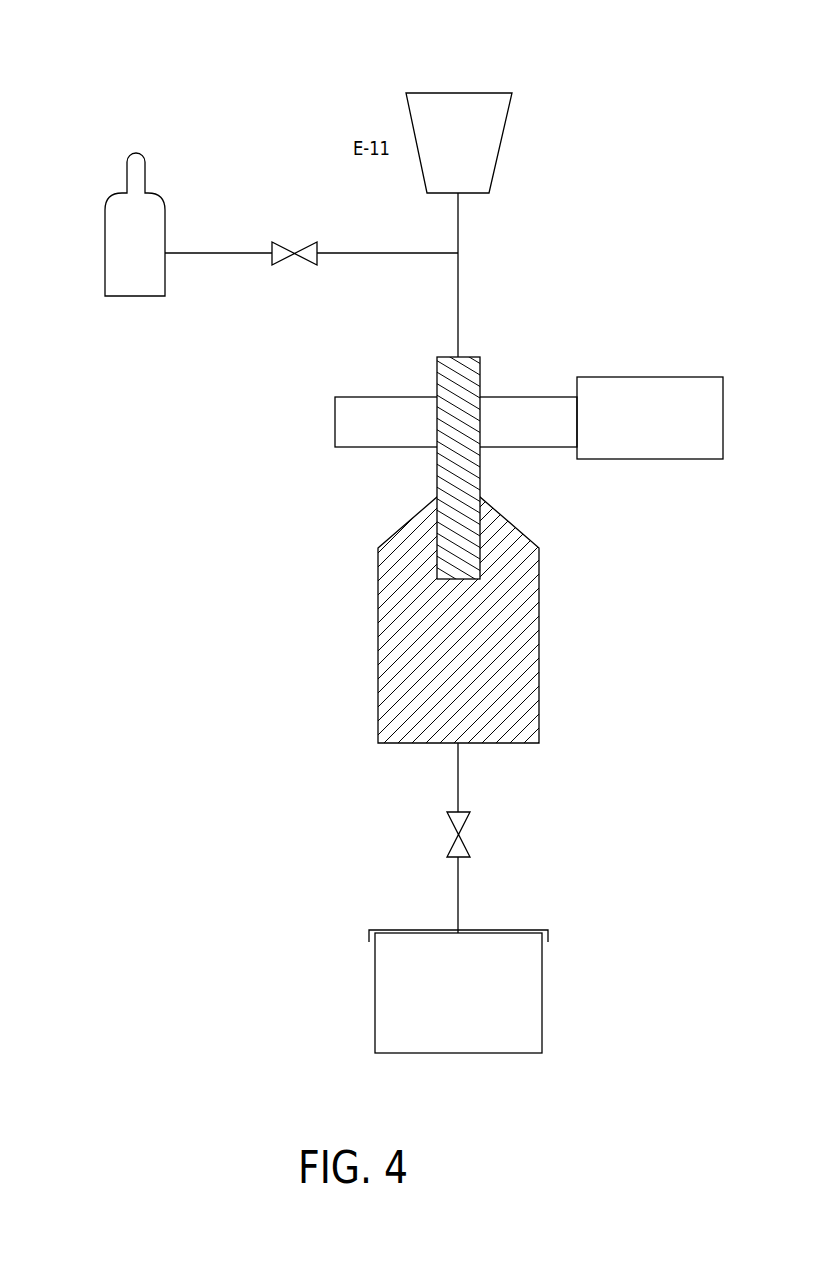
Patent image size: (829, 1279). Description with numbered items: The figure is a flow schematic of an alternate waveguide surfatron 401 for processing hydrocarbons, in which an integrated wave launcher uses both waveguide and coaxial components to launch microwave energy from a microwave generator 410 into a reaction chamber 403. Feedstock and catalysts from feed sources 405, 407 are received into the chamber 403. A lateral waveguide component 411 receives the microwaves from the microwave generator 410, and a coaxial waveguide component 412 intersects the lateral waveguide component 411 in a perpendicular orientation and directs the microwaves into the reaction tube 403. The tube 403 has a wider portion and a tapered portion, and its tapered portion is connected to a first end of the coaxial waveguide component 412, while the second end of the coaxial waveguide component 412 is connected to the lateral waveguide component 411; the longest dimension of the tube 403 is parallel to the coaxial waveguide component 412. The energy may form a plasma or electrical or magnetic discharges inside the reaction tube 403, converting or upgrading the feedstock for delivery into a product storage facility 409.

The waveguide surfatron 401 is at (190, 428).
The reaction chamber 403 is at (435, 743).
The feed source 405 is at (457, 93).
The feed source 407 is at (105, 248).
The product storage facility 409 is at (375, 1000).
The microwave generator 410 is at (653, 377).
The lateral waveguide component 411 is at (542, 395).
The coaxial waveguide component 412 is at (437, 480).